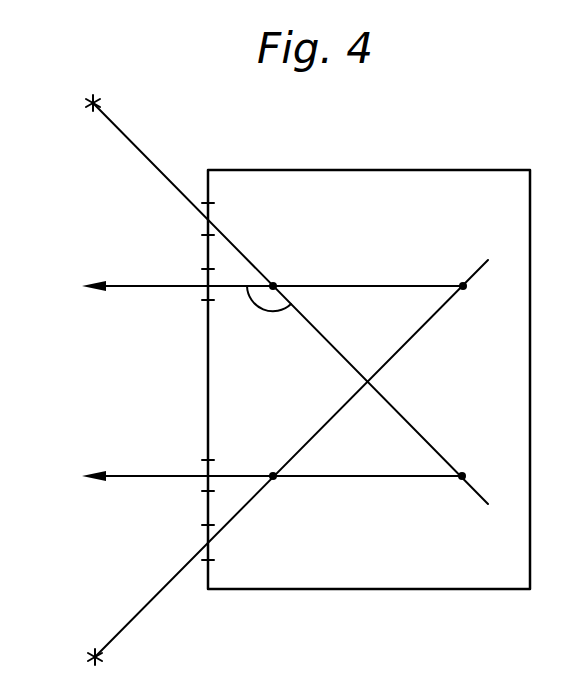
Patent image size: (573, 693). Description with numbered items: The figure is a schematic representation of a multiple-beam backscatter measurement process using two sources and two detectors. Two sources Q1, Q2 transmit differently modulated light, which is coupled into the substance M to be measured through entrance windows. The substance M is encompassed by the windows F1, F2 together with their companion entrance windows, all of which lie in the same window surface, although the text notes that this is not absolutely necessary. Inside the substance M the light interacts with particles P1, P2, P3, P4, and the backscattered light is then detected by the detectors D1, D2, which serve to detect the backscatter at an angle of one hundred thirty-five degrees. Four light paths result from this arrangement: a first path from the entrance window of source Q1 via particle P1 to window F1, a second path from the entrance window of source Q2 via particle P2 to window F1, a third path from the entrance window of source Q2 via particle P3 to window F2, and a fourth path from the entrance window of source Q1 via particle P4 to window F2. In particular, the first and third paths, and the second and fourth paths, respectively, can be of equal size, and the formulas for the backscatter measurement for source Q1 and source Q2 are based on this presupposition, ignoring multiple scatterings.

The substance to be measured M is at (371, 188).
The source Q1 is at (266, 296).
The source Q2 is at (264, 469).
The detector D1 is at (252, 287).
The detector D2 is at (252, 478).
The window F1 is at (206, 296).
The window F2 is at (206, 461).
The particle P1 is at (277, 282).
The particle P2 is at (461, 282).
The particle P3 is at (275, 482).
The particle P4 is at (460, 482).